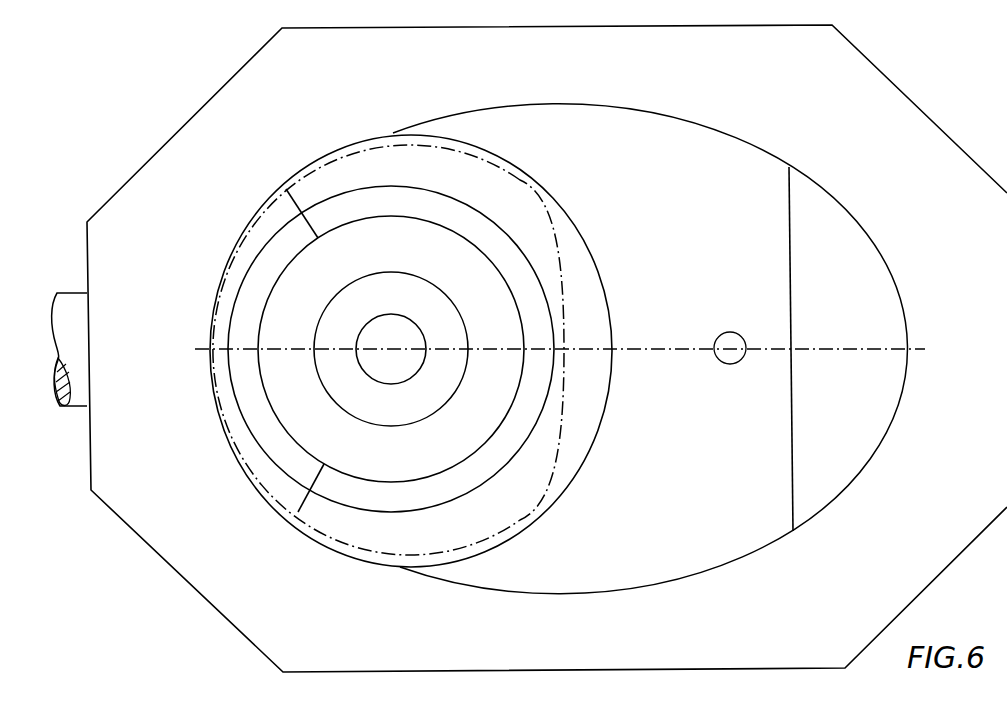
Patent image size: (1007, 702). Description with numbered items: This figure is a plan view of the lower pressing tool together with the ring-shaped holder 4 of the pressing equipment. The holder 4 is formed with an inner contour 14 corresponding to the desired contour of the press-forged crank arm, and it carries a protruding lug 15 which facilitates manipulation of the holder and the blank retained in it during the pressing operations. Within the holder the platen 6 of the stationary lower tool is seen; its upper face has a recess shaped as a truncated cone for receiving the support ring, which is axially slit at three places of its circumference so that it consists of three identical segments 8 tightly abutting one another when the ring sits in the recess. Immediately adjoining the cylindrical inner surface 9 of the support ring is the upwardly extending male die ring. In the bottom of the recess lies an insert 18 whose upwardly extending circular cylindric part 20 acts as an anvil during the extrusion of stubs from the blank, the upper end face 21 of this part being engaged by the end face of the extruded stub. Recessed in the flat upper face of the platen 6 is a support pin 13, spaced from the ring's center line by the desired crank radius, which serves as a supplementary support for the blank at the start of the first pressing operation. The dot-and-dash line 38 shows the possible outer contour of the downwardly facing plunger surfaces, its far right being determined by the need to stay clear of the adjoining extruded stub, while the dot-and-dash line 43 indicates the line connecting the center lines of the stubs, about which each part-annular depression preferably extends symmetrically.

The ring-shaped holder 4 is at (935, 148).
The platen 6 is at (773, 256).
The segments 8 is at (597, 313).
The cylindrical inner surface 9 is at (268, 380).
The support pin 13 is at (728, 364).
The inner contour 14 is at (872, 462).
The protruding lug 15 is at (78, 397).
The insert 18 is at (500, 392).
The circular cylindric part 20 is at (422, 408).
The upper end face 21 is at (402, 375).
The dot-and-dash line 38 is at (558, 243).
The dot-and-dash line 43 is at (665, 347).